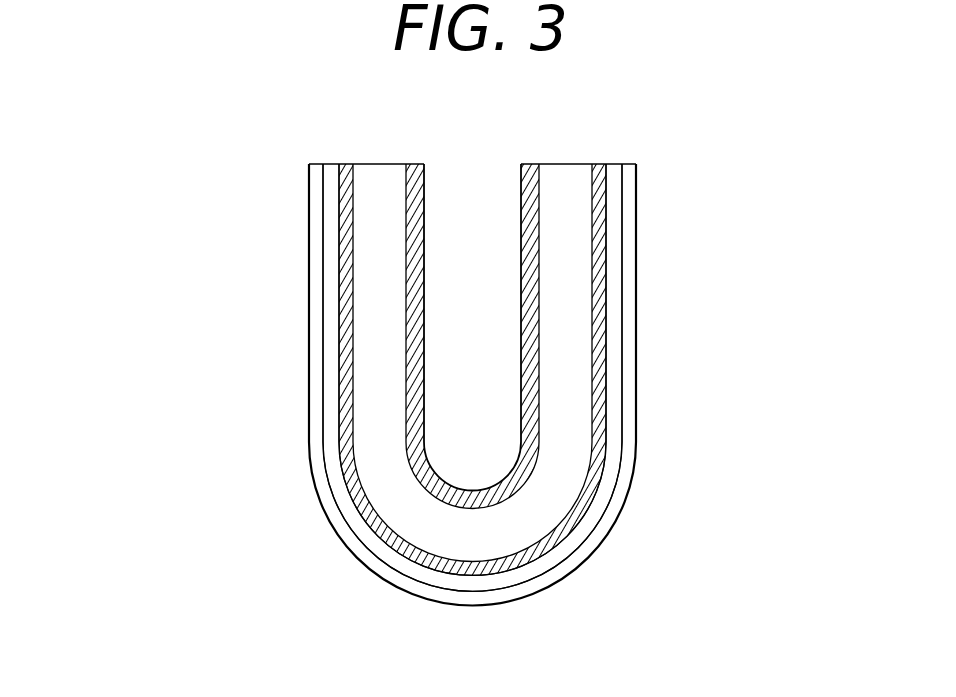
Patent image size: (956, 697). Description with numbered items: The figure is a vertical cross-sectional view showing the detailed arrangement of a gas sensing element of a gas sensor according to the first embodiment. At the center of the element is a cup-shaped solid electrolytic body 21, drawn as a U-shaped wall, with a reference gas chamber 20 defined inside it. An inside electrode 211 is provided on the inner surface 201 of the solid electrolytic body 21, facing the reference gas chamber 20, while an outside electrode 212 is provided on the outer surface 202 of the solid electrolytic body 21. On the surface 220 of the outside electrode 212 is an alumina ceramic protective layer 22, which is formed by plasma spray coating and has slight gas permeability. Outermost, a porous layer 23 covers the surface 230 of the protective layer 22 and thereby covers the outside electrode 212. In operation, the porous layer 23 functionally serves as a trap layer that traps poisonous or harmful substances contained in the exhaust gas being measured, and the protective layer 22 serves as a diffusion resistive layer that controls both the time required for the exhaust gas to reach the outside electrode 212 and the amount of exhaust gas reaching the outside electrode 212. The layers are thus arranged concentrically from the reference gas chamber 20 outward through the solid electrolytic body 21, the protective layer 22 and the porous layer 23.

The reference gas chamber 20 is at (474, 212).
The inner surface 201 is at (421, 350).
The outer surface 202 is at (352, 496).
The solid electrolytic body 21 is at (403, 530).
The inside electrode 211 is at (533, 253).
The outside electrode 212 is at (598, 325).
The protective layer 22 is at (612, 433).
The surface of outside electrode 220 is at (606, 378).
The porous layer 23 is at (615, 500).
The surface of protective layer 230 is at (588, 538).